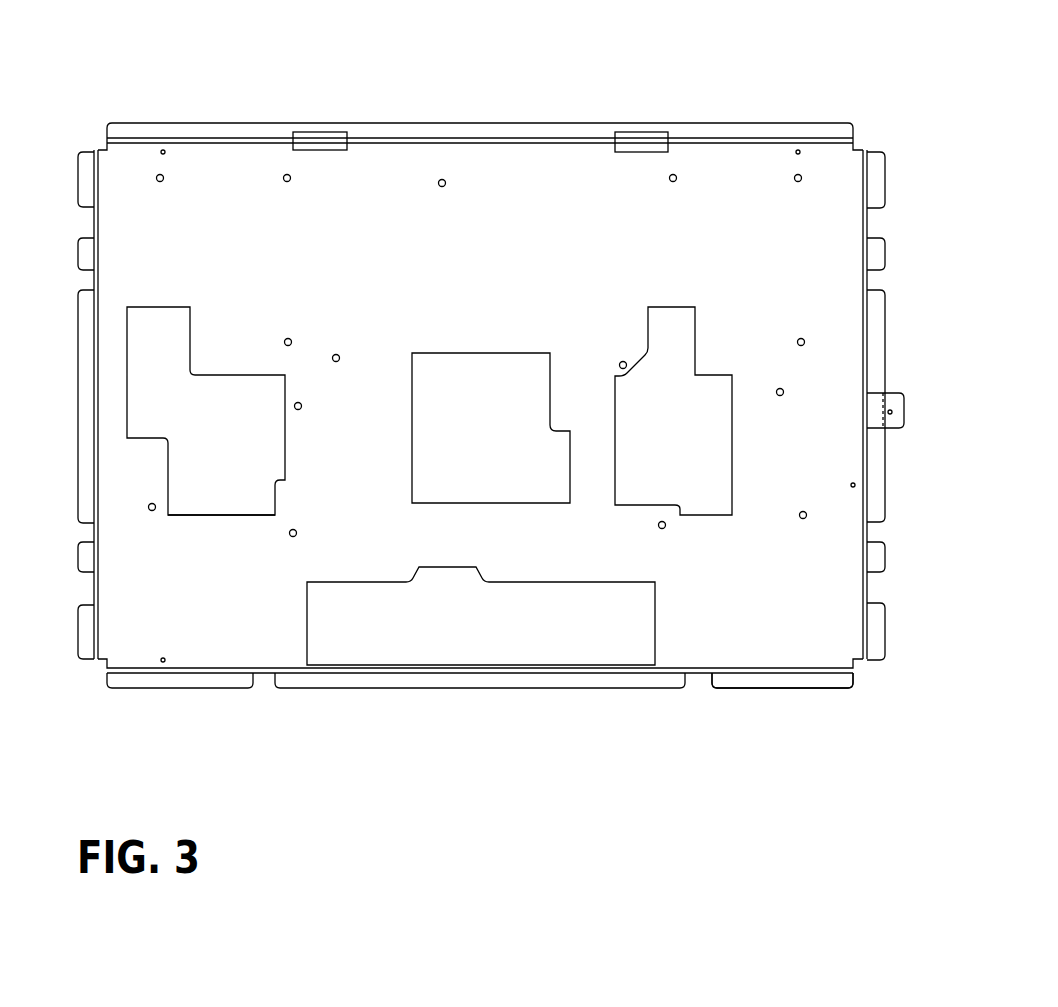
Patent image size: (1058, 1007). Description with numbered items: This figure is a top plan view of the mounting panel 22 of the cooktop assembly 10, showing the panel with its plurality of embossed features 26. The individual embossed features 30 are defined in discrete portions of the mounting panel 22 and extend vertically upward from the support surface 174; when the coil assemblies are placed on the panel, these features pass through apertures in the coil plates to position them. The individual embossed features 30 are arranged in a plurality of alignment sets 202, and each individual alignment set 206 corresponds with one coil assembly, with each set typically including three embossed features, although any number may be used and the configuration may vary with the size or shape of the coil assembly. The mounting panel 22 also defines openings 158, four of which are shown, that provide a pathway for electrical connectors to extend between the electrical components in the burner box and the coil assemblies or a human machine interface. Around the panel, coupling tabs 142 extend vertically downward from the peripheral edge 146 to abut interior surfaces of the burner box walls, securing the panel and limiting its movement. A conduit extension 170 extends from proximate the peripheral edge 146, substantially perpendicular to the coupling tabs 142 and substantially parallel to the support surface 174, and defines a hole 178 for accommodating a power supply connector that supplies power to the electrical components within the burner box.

The cooktop assembly 10 is at (162, 88).
The mounting panel 22 is at (93, 590).
The plurality of embossed features 26 is at (807, 173).
The individual embossed feature 30 is at (805, 342).
The coupling tab 142 is at (803, 678).
The peripheral edge 146 is at (865, 225).
The opening 158 is at (142, 377).
The conduit extension 170 is at (891, 426).
The support surface 174 is at (514, 225).
The hole 178 is at (893, 410).
The plurality of alignment sets 202 is at (213, 523).
The individual alignment set 206 is at (305, 188).